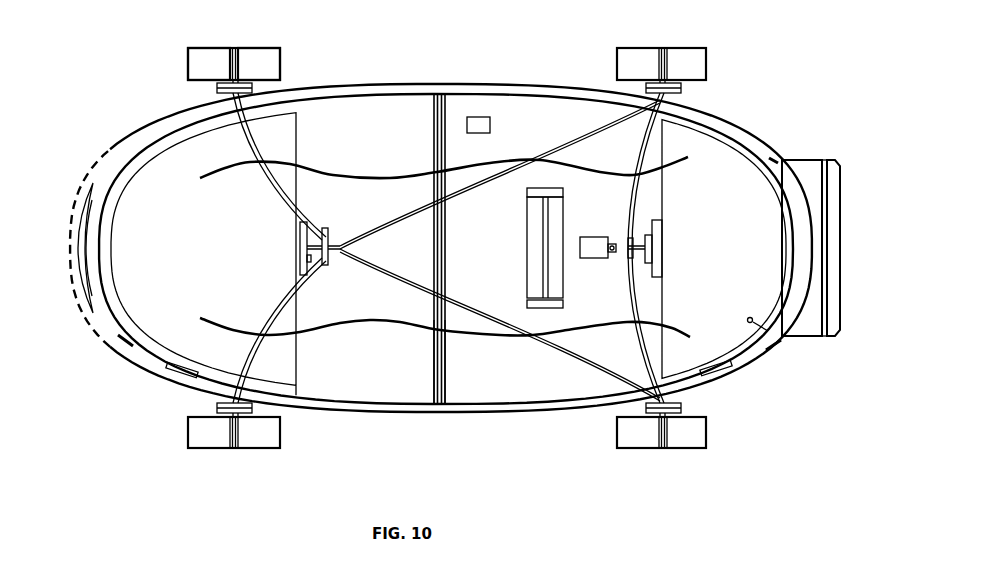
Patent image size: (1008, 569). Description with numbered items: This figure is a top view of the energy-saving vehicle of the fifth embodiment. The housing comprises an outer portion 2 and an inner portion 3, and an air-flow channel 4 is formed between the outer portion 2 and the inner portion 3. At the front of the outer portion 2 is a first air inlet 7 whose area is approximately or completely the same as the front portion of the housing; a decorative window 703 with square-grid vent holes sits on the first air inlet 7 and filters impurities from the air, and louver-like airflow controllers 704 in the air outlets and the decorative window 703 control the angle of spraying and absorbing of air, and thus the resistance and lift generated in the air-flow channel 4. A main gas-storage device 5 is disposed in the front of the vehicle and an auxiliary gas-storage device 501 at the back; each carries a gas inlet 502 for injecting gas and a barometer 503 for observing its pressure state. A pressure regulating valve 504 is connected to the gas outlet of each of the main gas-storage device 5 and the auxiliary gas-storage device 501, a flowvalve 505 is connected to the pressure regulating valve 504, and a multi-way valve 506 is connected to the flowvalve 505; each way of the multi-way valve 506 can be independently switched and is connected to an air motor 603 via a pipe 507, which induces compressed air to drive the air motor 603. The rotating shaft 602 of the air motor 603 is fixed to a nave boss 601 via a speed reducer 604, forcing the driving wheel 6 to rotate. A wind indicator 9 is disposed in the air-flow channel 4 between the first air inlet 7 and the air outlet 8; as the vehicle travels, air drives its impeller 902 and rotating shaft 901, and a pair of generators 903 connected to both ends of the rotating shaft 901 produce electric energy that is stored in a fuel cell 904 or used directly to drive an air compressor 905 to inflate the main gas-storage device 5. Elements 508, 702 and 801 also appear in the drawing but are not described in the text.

The outer portion 2 is at (330, 87).
The inner portion 3 is at (368, 92).
The air-flow channel 4 is at (408, 88).
The main gas-storage device 5 is at (153, 283).
The driving wheel 6 is at (205, 58).
The first air inlet 7 is at (82, 228).
The air outlet 8 is at (797, 332).
The wind indicator 9 is at (537, 260).
The auxiliary gas-storage device 501 is at (820, 160).
The gas inlet 502 is at (127, 342).
The barometer 503 is at (170, 366).
The pressure regulating valve 504 is at (290, 275).
The flowvalve 505 is at (750, 222).
The multi-way valve 506 is at (327, 240).
The pipe 507 is at (303, 268).
The lower frame arm 508 is at (545, 316).
The nave boss 601 is at (232, 55).
The rotating shaft 602 is at (238, 52).
The air motor 603 is at (218, 88).
The speed reducer 604 is at (257, 77).
The axle lower section 702 is at (433, 328).
The decorative window 703 is at (826, 163).
The airflow controller 704 is at (80, 242).
The end cap 801 is at (838, 205).
The rotating shaft 901 is at (547, 230).
The impeller 902 is at (555, 258).
The generator 903 is at (667, 77).
The fuel cell 904 is at (483, 123).
The air compressor 905 is at (600, 247).